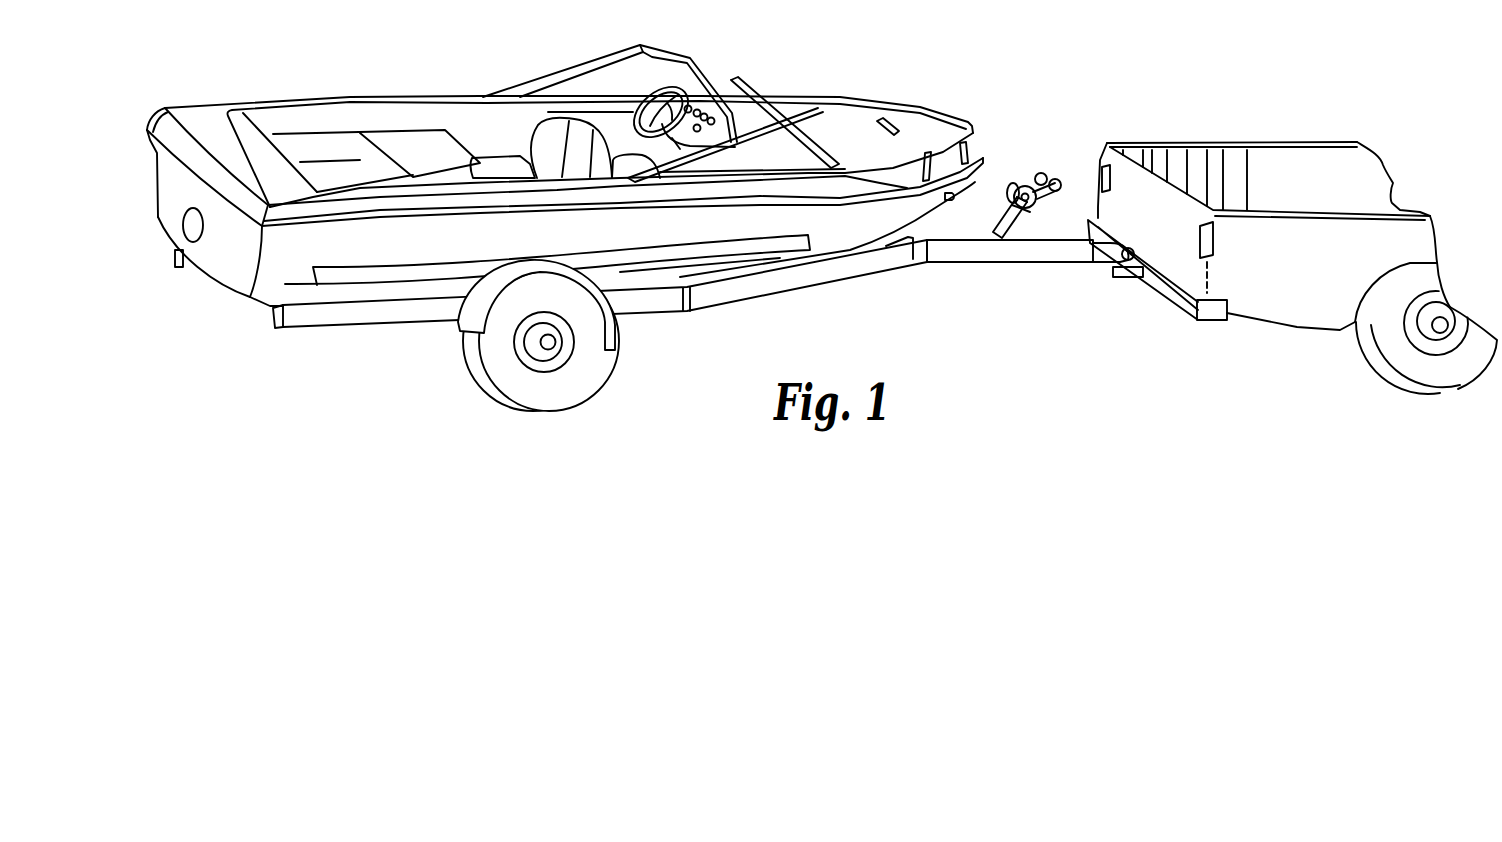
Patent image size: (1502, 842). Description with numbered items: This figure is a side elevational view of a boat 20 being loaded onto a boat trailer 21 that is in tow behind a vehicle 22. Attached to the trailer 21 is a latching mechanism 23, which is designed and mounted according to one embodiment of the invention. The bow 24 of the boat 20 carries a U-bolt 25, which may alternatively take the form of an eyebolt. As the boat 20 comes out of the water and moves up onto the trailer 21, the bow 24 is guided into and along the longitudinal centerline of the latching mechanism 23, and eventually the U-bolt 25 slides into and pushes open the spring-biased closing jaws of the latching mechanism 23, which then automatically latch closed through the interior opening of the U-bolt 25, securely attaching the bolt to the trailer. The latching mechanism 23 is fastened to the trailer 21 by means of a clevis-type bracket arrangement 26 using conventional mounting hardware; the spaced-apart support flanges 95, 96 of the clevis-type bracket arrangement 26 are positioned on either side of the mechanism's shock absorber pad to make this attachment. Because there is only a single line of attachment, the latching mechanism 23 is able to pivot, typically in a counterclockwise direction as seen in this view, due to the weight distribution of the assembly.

The boat 20 is at (882, 150).
The boat trailer 21 is at (833, 268).
The vehicle 22 is at (1267, 160).
The latching mechanism 23 is at (1044, 200).
The bow 24 is at (920, 243).
The U-bolt 25 is at (995, 198).
The clevis-type bracket arrangement 26 is at (1025, 218).
The support flange 95 is at (1008, 208).
The support flange 96 is at (1022, 217).